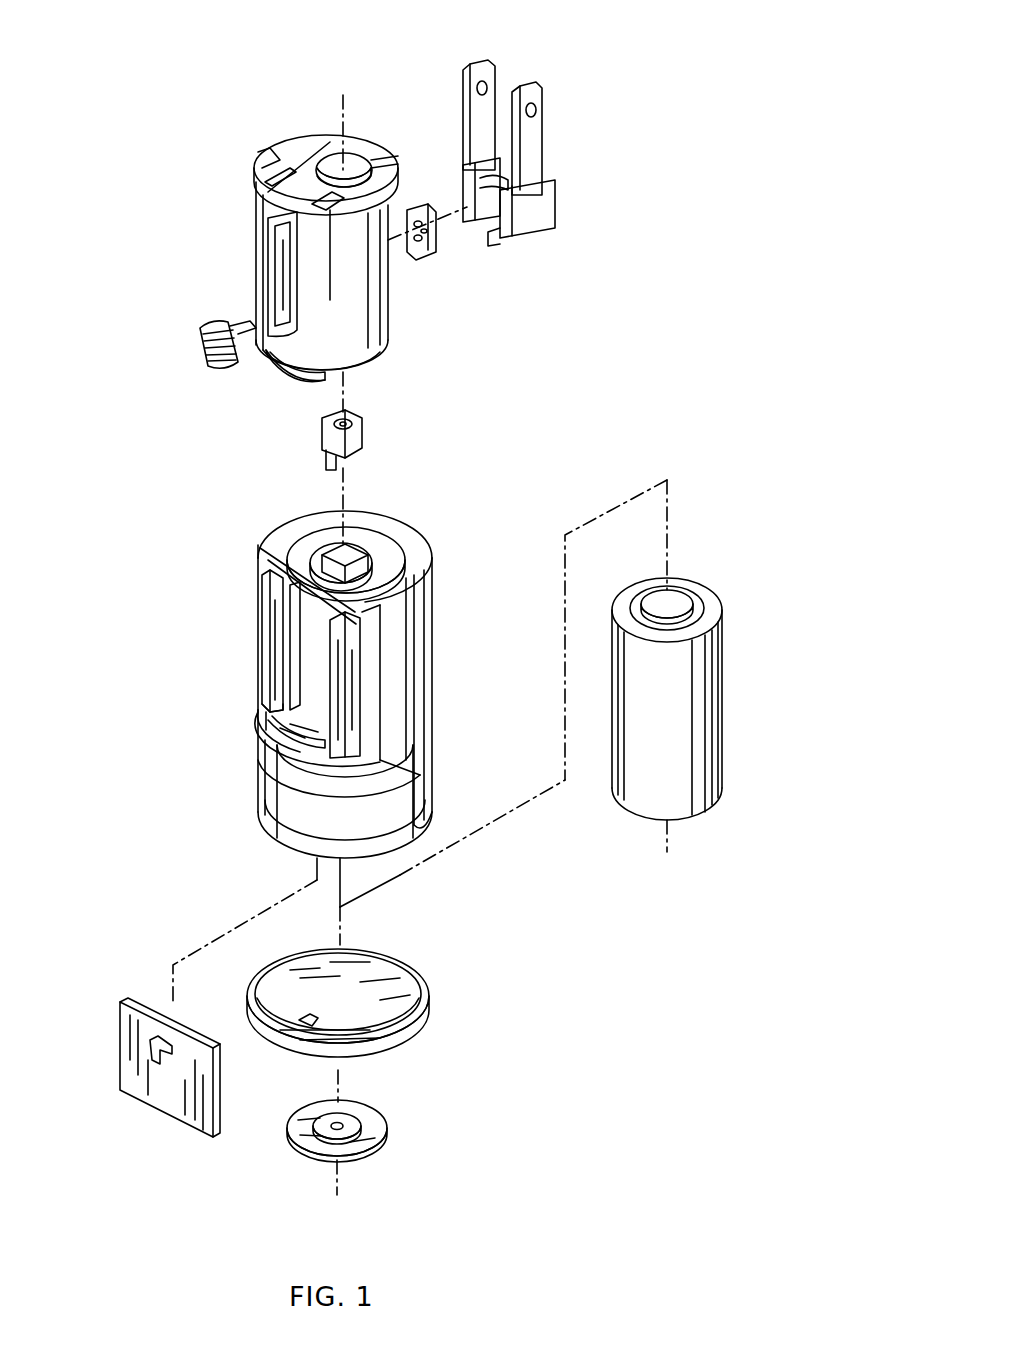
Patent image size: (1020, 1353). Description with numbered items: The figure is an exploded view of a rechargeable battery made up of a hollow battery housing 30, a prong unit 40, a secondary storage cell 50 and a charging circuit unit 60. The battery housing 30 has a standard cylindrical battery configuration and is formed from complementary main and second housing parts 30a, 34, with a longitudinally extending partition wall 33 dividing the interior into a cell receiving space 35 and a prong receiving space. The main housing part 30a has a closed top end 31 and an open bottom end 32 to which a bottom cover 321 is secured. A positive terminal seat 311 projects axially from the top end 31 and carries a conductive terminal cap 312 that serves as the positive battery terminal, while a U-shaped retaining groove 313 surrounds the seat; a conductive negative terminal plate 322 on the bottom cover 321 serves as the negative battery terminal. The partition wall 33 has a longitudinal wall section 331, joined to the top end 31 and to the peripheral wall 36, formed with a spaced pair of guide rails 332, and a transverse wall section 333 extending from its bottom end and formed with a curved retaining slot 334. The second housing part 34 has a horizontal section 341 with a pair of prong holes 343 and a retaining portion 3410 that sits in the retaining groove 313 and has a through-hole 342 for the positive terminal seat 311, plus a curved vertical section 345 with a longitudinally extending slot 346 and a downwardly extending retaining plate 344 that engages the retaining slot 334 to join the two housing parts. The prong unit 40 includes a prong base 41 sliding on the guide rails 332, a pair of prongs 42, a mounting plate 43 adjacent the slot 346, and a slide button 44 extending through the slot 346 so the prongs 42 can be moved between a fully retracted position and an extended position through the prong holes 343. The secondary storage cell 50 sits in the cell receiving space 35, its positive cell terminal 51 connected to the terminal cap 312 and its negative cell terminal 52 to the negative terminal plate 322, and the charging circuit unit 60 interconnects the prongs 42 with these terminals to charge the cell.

The battery housing 30 is at (214, 506).
The main housing part 30a is at (280, 780).
The closed top end 31 is at (290, 528).
The positive terminal seat 311 is at (350, 545).
The conductive terminal cap 312 is at (352, 414).
The U-shaped retaining groove 313 is at (372, 556).
The open bottom end 32 is at (434, 836).
The bottom cover 321 is at (428, 998).
The negative terminal plate 322 is at (382, 1130).
The partition wall 33 is at (376, 748).
The longitudinal wall section 331 is at (372, 650).
The guide rails 332 is at (265, 632).
The transverse wall section 333 is at (262, 702).
The curved retaining slot 334 is at (276, 748).
The second housing part 34 is at (262, 220).
The horizontal section 341 is at (262, 160).
The through-hole 342 is at (356, 156).
The prong holes 343 is at (320, 200).
The retaining portion 3410 is at (333, 140).
The retaining plate 344 is at (302, 372).
The vertical section 345 is at (356, 290).
The longitudinally extending slot 346 is at (286, 246).
The cell receiving space 35 is at (266, 846).
The peripheral wall 36 is at (410, 694).
The prong unit 40 is at (478, 270).
The prong base 41 is at (556, 206).
The prongs 42 is at (492, 74).
The mounting plate 43 is at (418, 210).
The slide button 44 is at (196, 340).
The secondary storage cell 50 is at (696, 669).
The positive cell terminal 51 is at (664, 594).
The negative cell terminal 52 is at (700, 818).
The charging circuit unit 60 is at (136, 1006).